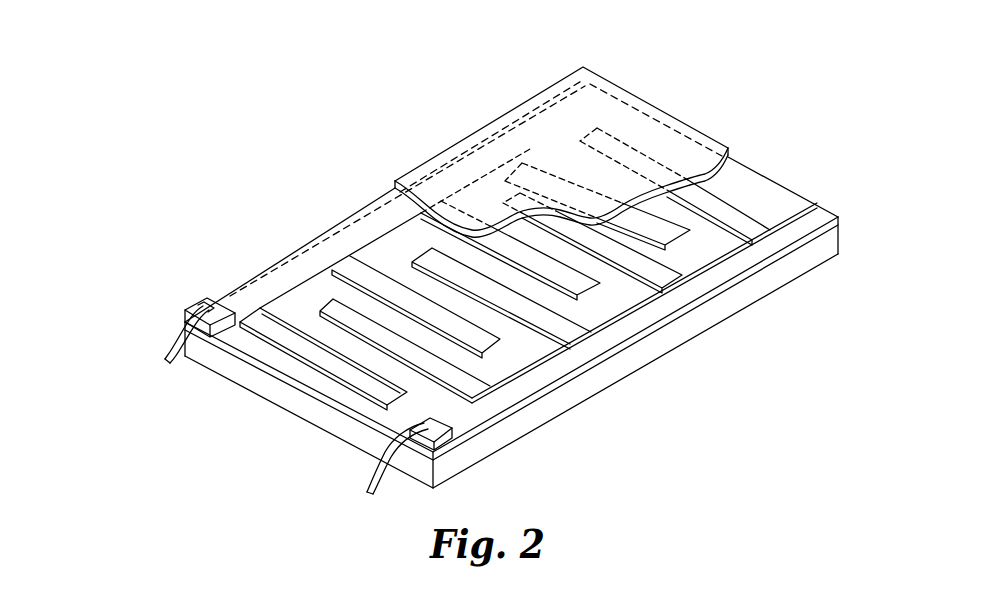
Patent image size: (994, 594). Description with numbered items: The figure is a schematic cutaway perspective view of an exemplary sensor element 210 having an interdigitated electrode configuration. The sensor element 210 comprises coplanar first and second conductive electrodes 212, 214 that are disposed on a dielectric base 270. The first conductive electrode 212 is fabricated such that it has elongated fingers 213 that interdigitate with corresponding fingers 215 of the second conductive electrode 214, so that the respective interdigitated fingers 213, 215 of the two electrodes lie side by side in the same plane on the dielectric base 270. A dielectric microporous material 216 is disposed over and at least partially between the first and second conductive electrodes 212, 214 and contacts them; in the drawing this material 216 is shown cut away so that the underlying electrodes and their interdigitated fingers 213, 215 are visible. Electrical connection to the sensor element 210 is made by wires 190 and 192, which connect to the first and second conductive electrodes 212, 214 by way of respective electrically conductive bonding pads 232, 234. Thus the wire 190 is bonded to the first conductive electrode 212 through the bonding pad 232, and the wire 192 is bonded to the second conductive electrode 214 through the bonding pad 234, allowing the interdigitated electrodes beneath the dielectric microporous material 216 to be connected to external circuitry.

The sensor element 210 is at (706, 61).
The first conductive electrode 212 is at (815, 215).
The interdigitated fingers 213 is at (335, 308).
The second conductive electrode 214 is at (259, 288).
The interdigitated fingers 215 is at (292, 340).
The dielectric microporous material 216 is at (708, 158).
The dielectric base 270 is at (803, 259).
The electrically conductive bonding pad 232 is at (447, 428).
The electrically conductive bonding pad 234 is at (200, 305).
The wire 190 is at (365, 487).
The wire 192 is at (163, 354).